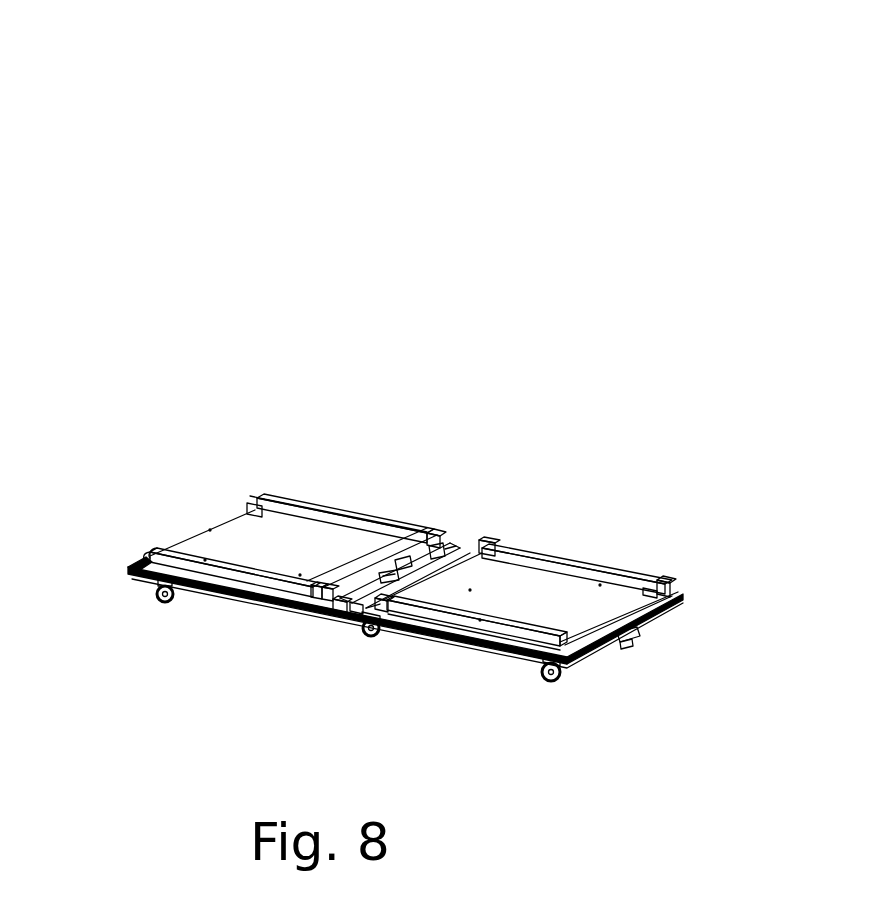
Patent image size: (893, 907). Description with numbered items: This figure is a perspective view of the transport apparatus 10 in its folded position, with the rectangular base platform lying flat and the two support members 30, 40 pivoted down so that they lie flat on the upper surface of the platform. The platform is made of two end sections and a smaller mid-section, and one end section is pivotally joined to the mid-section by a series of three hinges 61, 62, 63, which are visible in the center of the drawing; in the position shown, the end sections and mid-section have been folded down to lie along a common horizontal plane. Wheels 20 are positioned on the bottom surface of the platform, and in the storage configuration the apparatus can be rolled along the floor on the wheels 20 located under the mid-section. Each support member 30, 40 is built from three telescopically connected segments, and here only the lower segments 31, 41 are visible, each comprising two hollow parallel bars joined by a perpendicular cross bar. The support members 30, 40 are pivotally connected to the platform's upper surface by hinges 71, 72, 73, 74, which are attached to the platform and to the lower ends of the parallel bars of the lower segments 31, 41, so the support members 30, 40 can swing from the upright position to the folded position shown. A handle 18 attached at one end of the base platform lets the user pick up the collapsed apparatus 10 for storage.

The transport apparatus 10 is at (76, 148).
The handle 18 is at (633, 640).
The wheels 20 is at (155, 592).
The support member 30 is at (376, 500).
The lower segment 31 is at (323, 413).
The support member 40 is at (513, 522).
The lower segment 41 is at (590, 571).
The hinge 61 is at (325, 607).
The hinge 62 is at (388, 574).
The hinge 63 is at (436, 547).
The hinge 71 is at (143, 552).
The hinge 72 is at (252, 505).
The hinge 73 is at (546, 660).
The hinge 74 is at (660, 578).